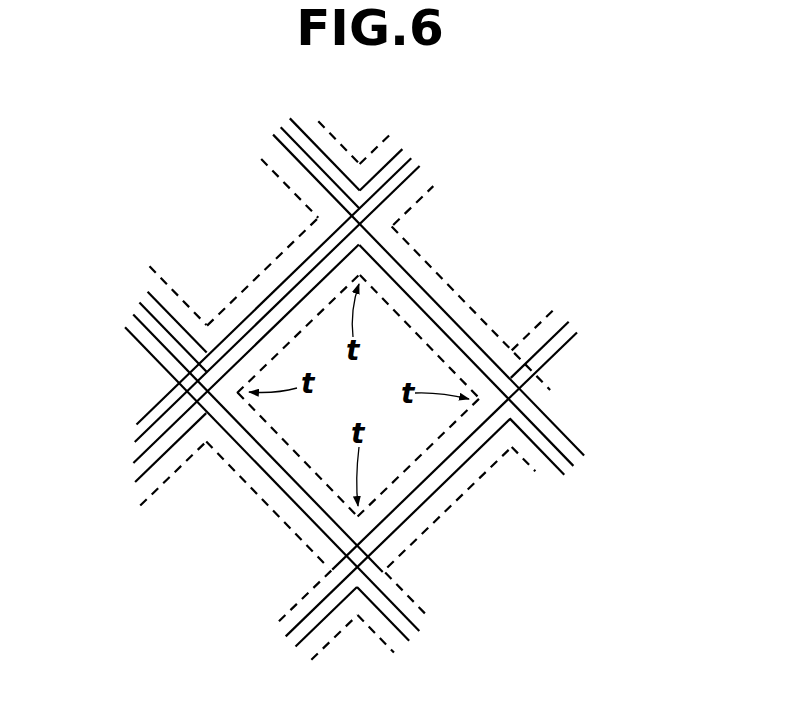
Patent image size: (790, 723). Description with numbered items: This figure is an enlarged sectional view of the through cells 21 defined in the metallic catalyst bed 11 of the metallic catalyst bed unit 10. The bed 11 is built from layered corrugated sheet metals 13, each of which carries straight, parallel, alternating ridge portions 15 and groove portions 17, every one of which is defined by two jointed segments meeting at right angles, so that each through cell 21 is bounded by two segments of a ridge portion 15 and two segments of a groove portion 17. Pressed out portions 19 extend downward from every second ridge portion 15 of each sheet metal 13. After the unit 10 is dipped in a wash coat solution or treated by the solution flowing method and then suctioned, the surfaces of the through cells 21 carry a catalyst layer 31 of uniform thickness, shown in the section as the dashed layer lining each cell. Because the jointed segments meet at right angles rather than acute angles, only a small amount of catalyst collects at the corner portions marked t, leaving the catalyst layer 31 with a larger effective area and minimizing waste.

The metallic catalyst bed unit 10 is at (682, 99).
The metallic catalyst bed 11 is at (531, 171).
The corrugated sheet metal 13 is at (302, 156).
The ridge portion 15 is at (382, 245).
The groove portion 17 is at (182, 356).
The pressed out portion 19 is at (268, 314).
The through cell 21 is at (460, 298).
The catalyst layer 31 is at (586, 267).